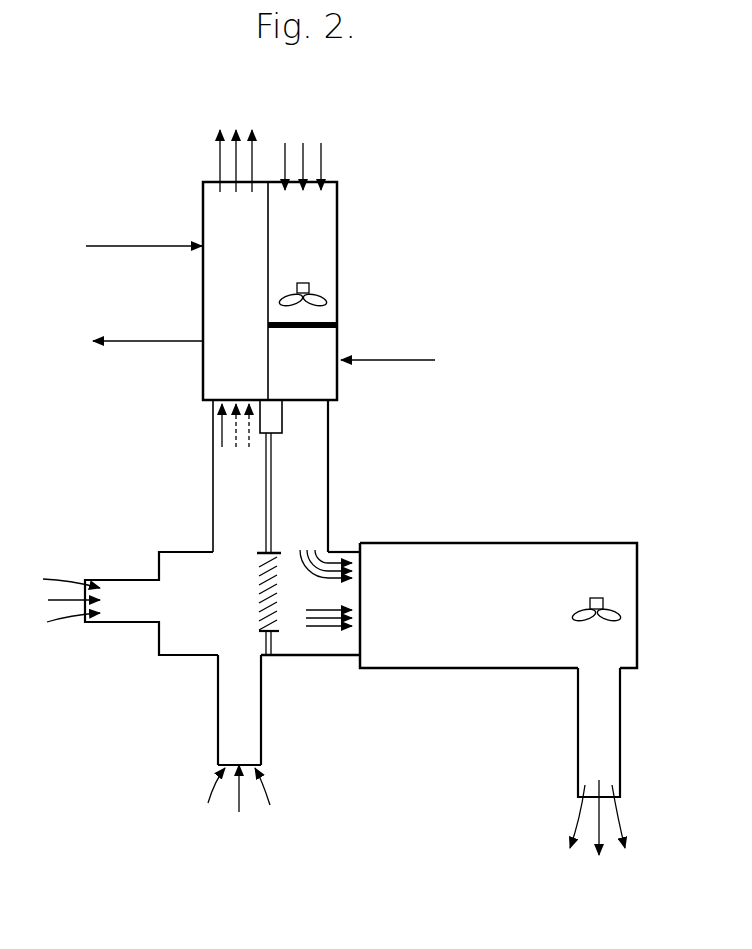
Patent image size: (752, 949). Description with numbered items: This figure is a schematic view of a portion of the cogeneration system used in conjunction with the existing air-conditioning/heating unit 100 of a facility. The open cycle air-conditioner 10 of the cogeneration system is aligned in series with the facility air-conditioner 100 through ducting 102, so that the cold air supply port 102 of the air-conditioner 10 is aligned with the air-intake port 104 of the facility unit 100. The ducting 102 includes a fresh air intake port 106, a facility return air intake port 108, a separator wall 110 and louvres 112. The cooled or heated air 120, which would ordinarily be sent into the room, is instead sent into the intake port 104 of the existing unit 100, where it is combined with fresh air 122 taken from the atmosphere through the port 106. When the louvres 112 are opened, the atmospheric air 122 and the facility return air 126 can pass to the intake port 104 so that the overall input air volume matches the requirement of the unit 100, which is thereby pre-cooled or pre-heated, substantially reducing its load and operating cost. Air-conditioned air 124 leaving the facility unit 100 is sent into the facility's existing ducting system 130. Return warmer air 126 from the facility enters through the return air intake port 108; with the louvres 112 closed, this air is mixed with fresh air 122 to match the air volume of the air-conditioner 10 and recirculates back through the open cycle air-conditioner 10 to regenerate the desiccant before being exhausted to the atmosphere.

The open cycle air-conditioner 10 is at (325, 240).
The existing air-conditioning/heating unit 100 is at (565, 557).
The ducting 102 is at (315, 455).
The air-intake port 104 is at (360, 568).
The fresh air intake port 106 is at (158, 602).
The return air intake port 108 is at (248, 752).
The separator wall 110 is at (272, 505).
The louvres 112 is at (272, 605).
The cooled or heated air 120 is at (328, 548).
The fresh air 122 is at (57, 600).
The air-conditioned air 124 is at (604, 815).
The facility return air 126 is at (237, 790).
The facility existing ducting system 130 is at (613, 742).